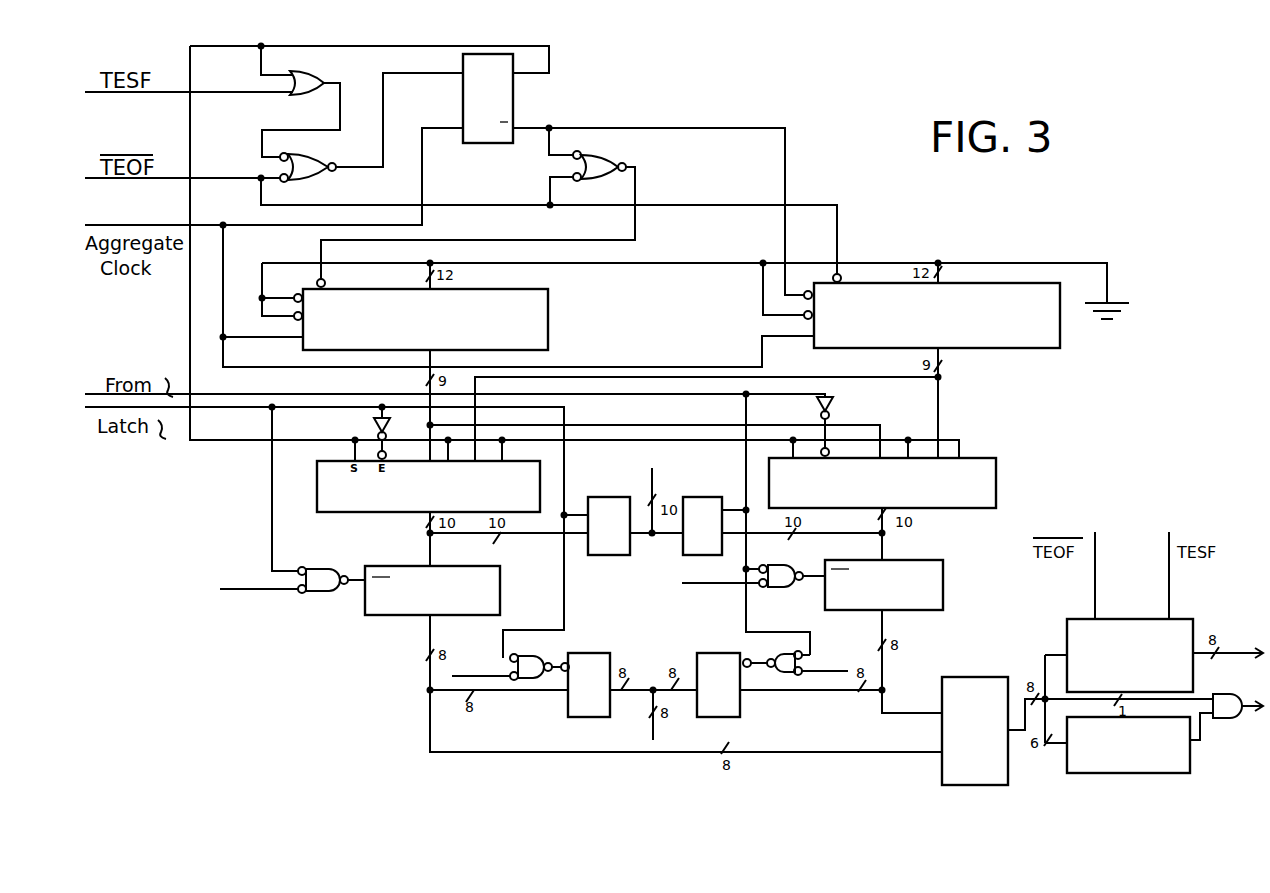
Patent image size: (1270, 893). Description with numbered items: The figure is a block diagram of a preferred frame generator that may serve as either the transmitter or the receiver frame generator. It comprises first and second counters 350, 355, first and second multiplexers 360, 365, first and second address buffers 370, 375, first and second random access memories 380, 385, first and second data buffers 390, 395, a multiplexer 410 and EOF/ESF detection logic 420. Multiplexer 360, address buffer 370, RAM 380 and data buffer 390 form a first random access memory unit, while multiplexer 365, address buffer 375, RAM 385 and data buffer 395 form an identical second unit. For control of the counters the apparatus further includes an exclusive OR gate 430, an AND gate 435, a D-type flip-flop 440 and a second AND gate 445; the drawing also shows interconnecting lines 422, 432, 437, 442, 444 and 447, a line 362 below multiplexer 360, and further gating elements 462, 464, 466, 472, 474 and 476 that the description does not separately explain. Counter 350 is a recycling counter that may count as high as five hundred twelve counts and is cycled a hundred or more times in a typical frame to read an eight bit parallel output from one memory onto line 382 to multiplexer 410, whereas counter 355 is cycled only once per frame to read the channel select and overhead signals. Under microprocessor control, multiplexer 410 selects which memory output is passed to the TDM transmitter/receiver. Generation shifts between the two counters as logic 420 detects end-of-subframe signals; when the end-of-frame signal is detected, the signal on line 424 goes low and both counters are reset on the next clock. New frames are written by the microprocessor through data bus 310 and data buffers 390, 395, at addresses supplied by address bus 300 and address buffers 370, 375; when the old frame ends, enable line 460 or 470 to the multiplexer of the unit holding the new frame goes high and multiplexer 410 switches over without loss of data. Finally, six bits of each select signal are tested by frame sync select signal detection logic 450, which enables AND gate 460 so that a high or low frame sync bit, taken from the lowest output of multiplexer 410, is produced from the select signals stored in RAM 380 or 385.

The address bus 300 is at (655, 492).
The data bus 310 is at (650, 728).
The first counter 350 is at (548, 322).
The second counter 355 is at (1060, 328).
The first multiplexer 360 is at (343, 509).
The address bus 362 is at (425, 528).
The second multiplexer 365 is at (996, 478).
The first address buffer 370 is at (612, 505).
The second address buffer 375 is at (705, 507).
The first random access memory 380 is at (490, 590).
The line 382 is at (430, 718).
The second random access memory 385 is at (943, 586).
The first data buffer 390 is at (595, 660).
The second data buffer 395 is at (717, 660).
The multiplexer 410 is at (978, 677).
The EOF/ESF detection logic 420 is at (1140, 619).
The TESF signal line 422 is at (165, 92).
The line 424 is at (165, 178).
The exclusive OR gate 430 is at (322, 79).
The connection line 432 is at (340, 118).
The AND gate 435 is at (318, 160).
The connection line 437 is at (390, 118).
The D-type flip-flop 440 is at (513, 103).
The Q output line 442 is at (549, 60).
The Q-bar output line 444 is at (625, 126).
The second AND gate 445 is at (616, 158).
The signal line 447 is at (645, 202).
The frame sync select signal detection logic 450 is at (1193, 757).
The AND gate 460 is at (1240, 688).
The tri-state inverter 462 is at (374, 427).
The NAND gate 464 is at (328, 600).
The NAND gate 466 is at (530, 680).
The enable line 470 is at (455, 369).
The tri-state inverter 472 is at (840, 406).
The NAND gate 474 is at (790, 568).
The NAND gate 476 is at (780, 680).